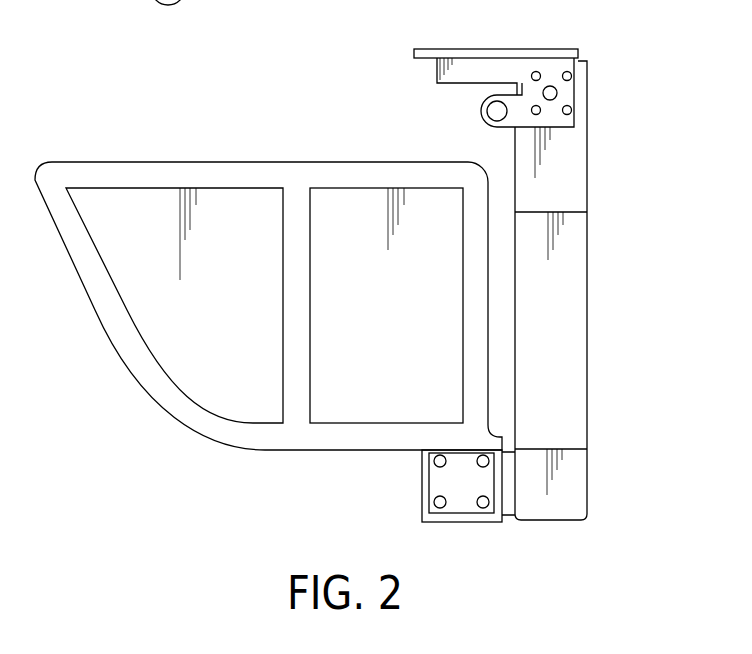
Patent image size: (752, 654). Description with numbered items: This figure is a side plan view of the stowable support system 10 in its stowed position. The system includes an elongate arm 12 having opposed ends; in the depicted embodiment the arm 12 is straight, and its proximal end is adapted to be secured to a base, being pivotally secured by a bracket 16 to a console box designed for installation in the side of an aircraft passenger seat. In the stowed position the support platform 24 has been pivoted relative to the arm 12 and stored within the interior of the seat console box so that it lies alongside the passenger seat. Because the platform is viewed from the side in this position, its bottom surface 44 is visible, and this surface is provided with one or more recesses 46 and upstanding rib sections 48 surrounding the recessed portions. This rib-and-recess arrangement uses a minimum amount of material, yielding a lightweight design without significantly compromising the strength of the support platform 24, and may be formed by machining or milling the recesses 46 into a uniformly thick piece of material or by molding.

The stowable support system 10 is at (639, 521).
The elongate arm 12 is at (607, 279).
The bracket 16 is at (491, 48).
The support platform 24 is at (174, 456).
The bottom surface 44 is at (386, 413).
The recesses 46 is at (347, 205).
The upstanding rib sections 48 is at (276, 436).